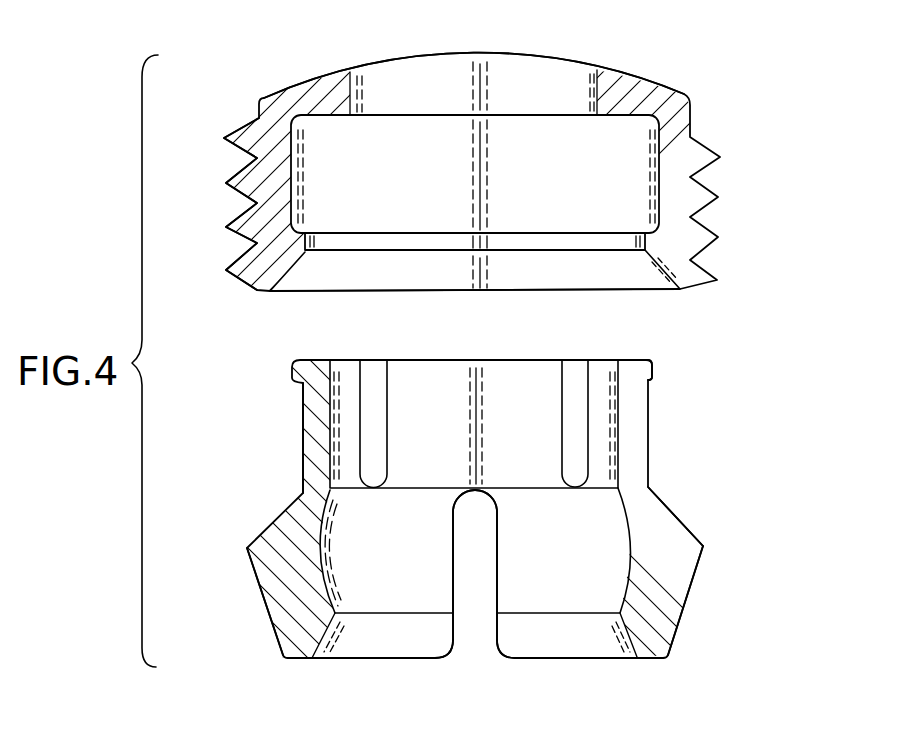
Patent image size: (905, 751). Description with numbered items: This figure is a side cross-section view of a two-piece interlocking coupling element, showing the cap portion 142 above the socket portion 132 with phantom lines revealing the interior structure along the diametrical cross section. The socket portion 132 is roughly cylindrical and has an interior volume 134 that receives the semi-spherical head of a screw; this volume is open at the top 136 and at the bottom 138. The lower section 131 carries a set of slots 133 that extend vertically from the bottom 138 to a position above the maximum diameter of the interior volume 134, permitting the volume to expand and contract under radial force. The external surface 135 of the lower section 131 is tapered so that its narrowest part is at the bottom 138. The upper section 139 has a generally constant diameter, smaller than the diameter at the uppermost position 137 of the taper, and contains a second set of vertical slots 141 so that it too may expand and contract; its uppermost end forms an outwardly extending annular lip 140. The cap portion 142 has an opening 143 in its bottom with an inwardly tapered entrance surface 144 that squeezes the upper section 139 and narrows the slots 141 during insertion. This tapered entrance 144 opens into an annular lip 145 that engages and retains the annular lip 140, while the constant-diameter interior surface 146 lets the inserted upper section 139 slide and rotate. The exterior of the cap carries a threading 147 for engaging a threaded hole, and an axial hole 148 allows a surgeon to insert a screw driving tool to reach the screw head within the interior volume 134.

The lower section 131 is at (267, 616).
The socket portion 132 is at (680, 455).
The slots 133 is at (467, 550).
The interior volume 134 is at (576, 573).
The external surface 135 is at (683, 610).
The top 136 is at (480, 358).
The uppermost position of the taper 137 is at (703, 545).
The bottom 138 is at (575, 658).
The upper section 139 is at (302, 422).
The annular lip 140 is at (657, 365).
The vertical slots 141 is at (373, 378).
The cap portion 142 is at (690, 84).
The opening 143 is at (605, 283).
The tapered entrance surface 144 is at (293, 265).
The annular lip 145 is at (641, 233).
The interior surface 146 is at (295, 174).
The threading 147 is at (225, 140).
The axial hole 148 is at (545, 82).